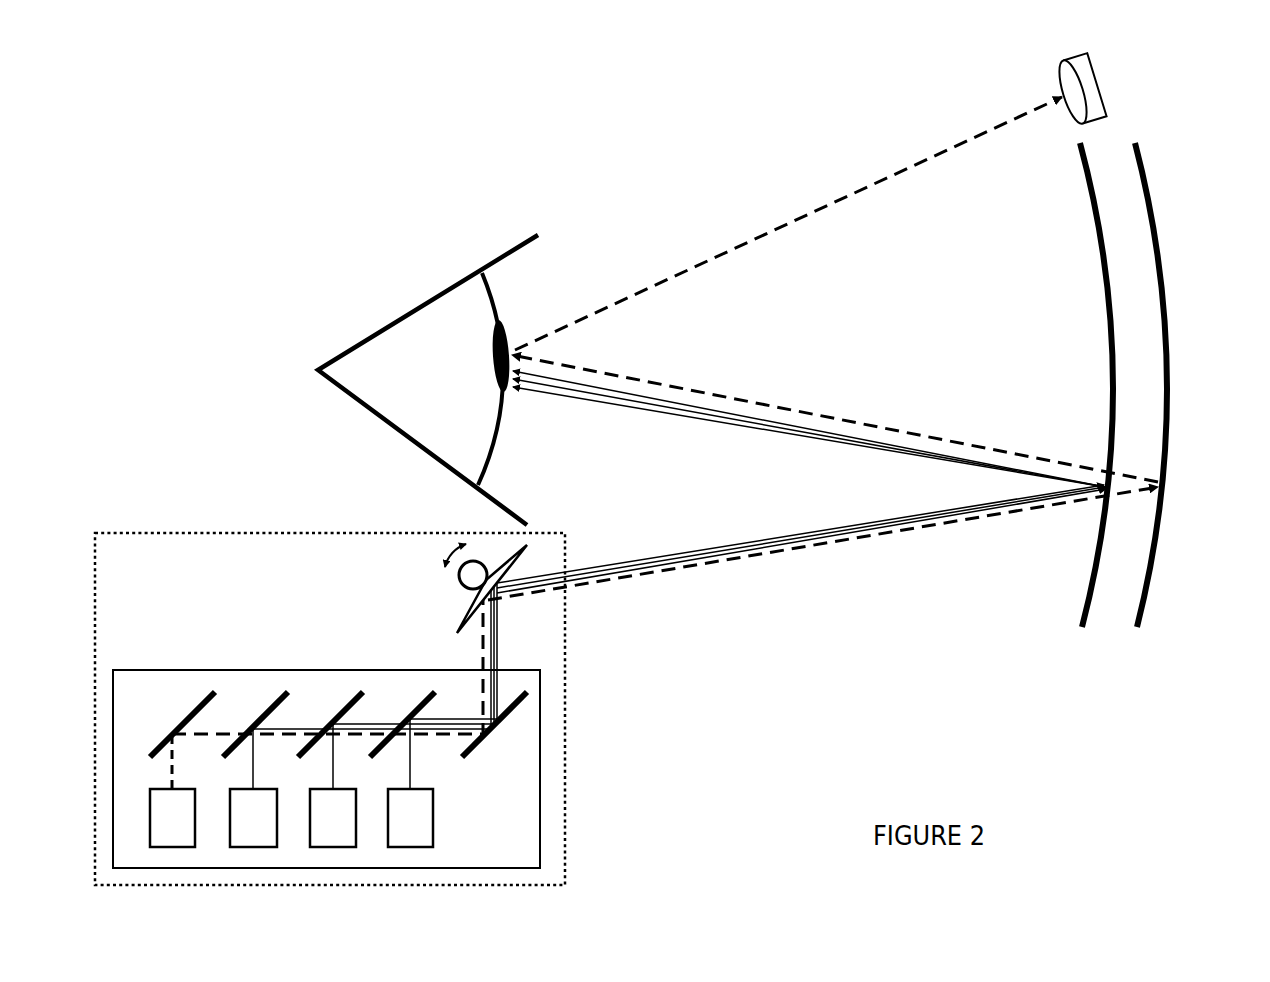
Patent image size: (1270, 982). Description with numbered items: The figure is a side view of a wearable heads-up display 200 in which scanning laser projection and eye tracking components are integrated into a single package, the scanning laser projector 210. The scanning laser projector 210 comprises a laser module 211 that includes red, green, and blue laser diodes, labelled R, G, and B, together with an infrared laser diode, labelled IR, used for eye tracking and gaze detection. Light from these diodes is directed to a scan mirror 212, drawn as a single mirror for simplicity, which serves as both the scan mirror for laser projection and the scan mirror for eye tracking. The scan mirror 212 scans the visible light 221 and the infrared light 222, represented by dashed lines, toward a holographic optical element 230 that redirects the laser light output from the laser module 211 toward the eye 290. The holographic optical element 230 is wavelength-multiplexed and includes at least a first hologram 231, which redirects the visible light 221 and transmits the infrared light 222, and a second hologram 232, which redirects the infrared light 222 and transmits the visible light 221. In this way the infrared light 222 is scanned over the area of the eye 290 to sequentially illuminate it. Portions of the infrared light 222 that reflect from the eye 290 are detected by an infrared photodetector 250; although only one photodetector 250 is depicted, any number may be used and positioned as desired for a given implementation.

The wearable heads-up display 200 is at (205, 188).
The scanning laser projector 210 is at (116, 572).
The laser module 211 is at (488, 854).
The scan mirror 212 is at (470, 575).
The visible light 221 is at (670, 553).
The infrared light 222 is at (760, 405).
The holographic optical element 230 is at (1140, 424).
The first hologram 231 is at (1103, 263).
The second hologram 232 is at (1167, 302).
The infrared photodetector 250 is at (1068, 82).
The eye 290 is at (408, 384).